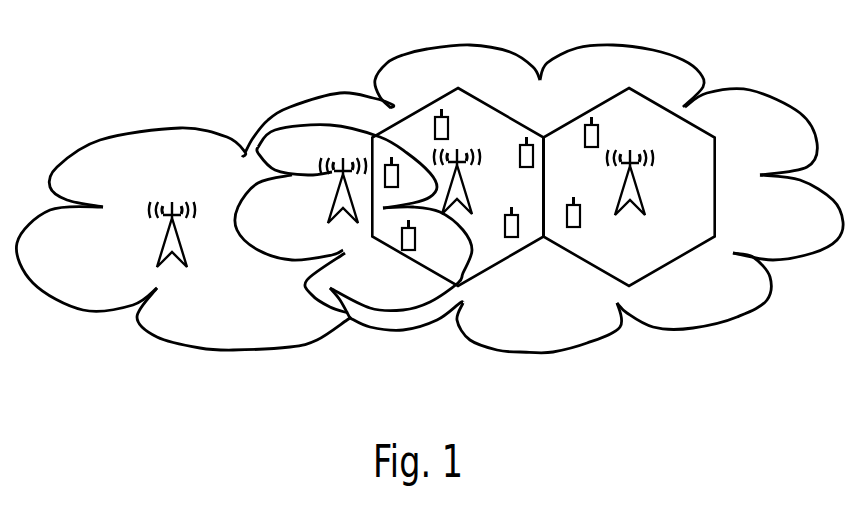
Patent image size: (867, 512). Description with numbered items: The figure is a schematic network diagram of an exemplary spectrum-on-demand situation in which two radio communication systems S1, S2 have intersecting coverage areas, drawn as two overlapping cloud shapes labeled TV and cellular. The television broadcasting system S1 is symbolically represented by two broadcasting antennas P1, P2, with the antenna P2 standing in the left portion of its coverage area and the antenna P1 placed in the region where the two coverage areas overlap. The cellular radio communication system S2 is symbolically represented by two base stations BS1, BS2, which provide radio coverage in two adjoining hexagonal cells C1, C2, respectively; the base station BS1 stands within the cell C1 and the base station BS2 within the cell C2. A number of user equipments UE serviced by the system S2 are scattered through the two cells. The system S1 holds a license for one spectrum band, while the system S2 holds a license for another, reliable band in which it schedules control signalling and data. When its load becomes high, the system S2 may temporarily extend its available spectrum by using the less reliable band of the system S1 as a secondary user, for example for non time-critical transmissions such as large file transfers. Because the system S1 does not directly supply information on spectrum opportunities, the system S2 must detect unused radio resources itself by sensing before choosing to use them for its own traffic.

The broadcasting antenna P1 is at (337, 203).
The broadcasting antenna P2 is at (160, 245).
The base station BS1 is at (465, 187).
The base station BS2 is at (637, 183).
The cell C1 is at (428, 105).
The cell C2 is at (673, 258).
The user equipment UE is at (512, 237).
The television broadcasting system S1 is at (237, 352).
The cellular radio communication system S2 is at (537, 355).